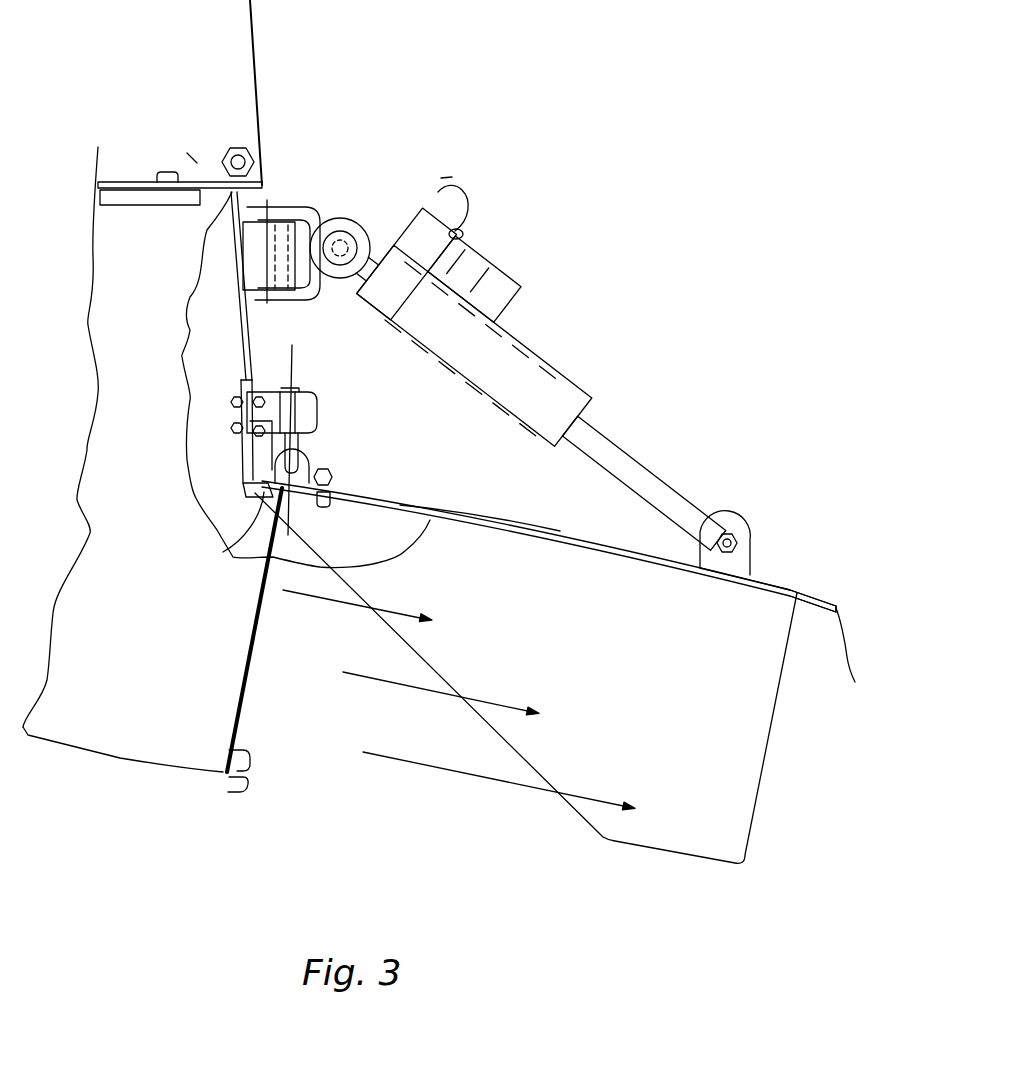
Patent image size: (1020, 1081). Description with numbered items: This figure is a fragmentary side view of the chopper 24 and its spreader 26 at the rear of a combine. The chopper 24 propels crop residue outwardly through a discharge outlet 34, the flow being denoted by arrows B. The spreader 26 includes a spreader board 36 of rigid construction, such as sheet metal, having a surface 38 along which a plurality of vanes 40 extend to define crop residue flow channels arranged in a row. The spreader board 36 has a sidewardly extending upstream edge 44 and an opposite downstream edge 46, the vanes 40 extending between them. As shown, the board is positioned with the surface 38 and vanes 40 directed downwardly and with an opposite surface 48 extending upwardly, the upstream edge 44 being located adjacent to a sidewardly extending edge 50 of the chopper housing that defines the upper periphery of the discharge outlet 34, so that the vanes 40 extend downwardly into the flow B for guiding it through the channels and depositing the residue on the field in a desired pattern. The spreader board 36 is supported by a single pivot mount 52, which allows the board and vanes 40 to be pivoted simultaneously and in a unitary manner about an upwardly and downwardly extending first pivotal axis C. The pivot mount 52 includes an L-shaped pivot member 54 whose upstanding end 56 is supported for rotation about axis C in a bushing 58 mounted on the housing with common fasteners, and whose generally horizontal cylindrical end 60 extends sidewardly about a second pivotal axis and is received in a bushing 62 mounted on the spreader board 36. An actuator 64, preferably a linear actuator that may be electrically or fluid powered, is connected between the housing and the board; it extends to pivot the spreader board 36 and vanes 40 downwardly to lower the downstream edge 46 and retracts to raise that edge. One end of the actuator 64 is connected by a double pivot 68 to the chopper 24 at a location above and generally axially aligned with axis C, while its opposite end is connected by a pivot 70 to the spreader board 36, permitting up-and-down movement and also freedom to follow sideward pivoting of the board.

The chopper 24 is at (128, 770).
The spreader 26 is at (792, 576).
The discharge outlet 34 is at (250, 675).
The spreader board 36 is at (837, 603).
The surface 38 is at (593, 556).
The vanes 40 is at (763, 780).
The upstream edge 44 is at (247, 493).
The downstream edge 46 is at (864, 660).
The opposite surface 48 is at (532, 530).
The edge of housing 50 is at (223, 552).
The single pivot mount 52 is at (324, 402).
The pivot member 54 is at (318, 441).
The upstanding end 56 is at (272, 380).
The bushing 58 is at (305, 392).
The cylindrical end 60 is at (245, 450).
The bushing 62 is at (335, 475).
The actuator 64 is at (579, 371).
The double pivot 68 is at (308, 200).
The pivot 70 is at (740, 524).
The first pivotal axis C is at (306, 421).
The arrows B is at (383, 610).